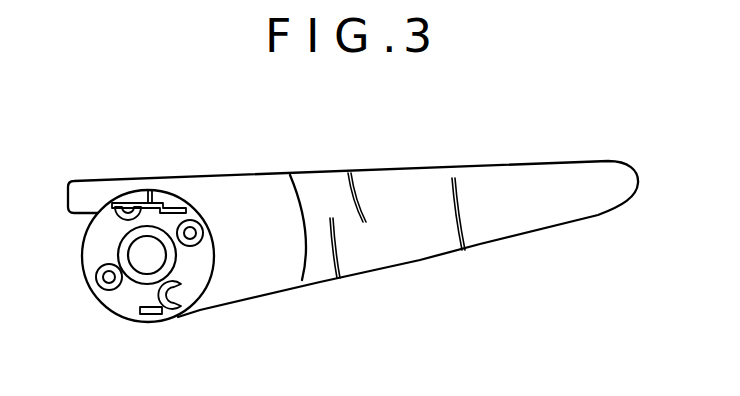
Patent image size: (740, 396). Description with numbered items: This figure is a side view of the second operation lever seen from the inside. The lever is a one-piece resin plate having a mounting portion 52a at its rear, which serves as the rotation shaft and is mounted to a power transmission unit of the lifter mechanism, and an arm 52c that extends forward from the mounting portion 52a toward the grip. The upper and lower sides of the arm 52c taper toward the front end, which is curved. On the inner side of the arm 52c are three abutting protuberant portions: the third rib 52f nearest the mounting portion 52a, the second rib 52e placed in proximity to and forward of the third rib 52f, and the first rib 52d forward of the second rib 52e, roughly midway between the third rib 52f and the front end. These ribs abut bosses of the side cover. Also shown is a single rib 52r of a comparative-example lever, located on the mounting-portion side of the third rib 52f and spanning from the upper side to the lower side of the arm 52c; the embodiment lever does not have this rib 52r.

The mounting portion 52a is at (140, 262).
The arm 52c is at (410, 258).
The first rib 52d is at (452, 178).
The second rib 52e is at (353, 172).
The third rib 52f is at (336, 276).
The rib 52r is at (292, 195).